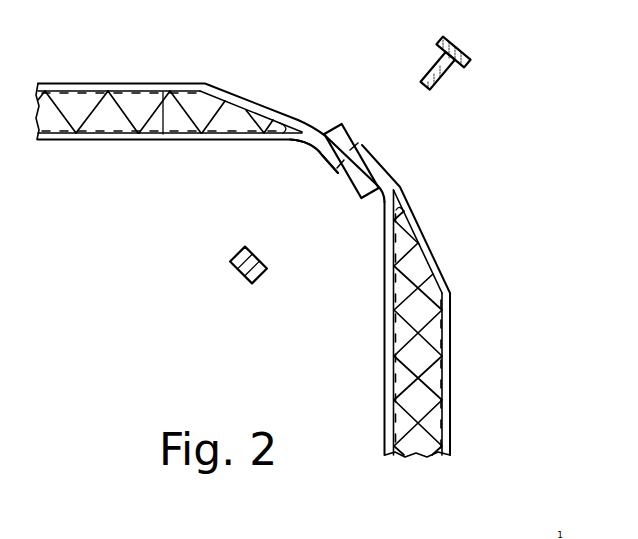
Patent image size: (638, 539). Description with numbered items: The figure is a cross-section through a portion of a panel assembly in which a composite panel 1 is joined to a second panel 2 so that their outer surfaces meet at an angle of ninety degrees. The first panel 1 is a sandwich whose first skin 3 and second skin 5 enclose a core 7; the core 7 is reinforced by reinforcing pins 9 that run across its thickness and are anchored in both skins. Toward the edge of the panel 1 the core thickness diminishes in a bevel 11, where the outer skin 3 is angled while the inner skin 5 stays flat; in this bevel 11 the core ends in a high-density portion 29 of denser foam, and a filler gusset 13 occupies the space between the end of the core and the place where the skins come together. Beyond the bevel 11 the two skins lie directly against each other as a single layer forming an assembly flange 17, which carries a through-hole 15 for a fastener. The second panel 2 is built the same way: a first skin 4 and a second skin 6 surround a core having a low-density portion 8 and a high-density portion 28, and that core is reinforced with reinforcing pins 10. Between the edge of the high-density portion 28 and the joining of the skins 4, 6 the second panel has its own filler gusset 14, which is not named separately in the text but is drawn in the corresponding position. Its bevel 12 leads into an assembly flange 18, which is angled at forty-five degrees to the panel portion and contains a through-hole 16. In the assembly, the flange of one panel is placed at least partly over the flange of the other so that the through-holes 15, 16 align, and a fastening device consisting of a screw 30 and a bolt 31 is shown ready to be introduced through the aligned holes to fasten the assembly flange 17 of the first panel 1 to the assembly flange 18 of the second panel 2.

The composite panel 1 is at (161, 81).
The second panel 2 is at (451, 312).
The first skin 3 is at (208, 84).
The first skin of second panel 4 is at (453, 353).
The second skin 5 is at (227, 138).
The second skin of second panel 6 is at (394, 360).
The core 7 is at (62, 137).
The low-density portion 8 is at (408, 397).
The reinforcing pins 9 is at (117, 136).
The reinforcing pins of second panel 10 is at (453, 398).
The bevel 11 is at (266, 104).
The bevel of second panel 12 is at (431, 244).
The filler gusset 13 is at (290, 132).
The taper tip of second lattice 14 is at (403, 208).
The through-hole 15 is at (345, 170).
The through-hole of second panel 16 is at (364, 147).
The assembly flange 17 is at (325, 167).
The assembly flange of second panel 18 is at (399, 167).
The high-density portion 28 is at (440, 313).
The high-density portion 29 is at (167, 136).
The screw 30 is at (450, 76).
The bolt 31 is at (230, 271).